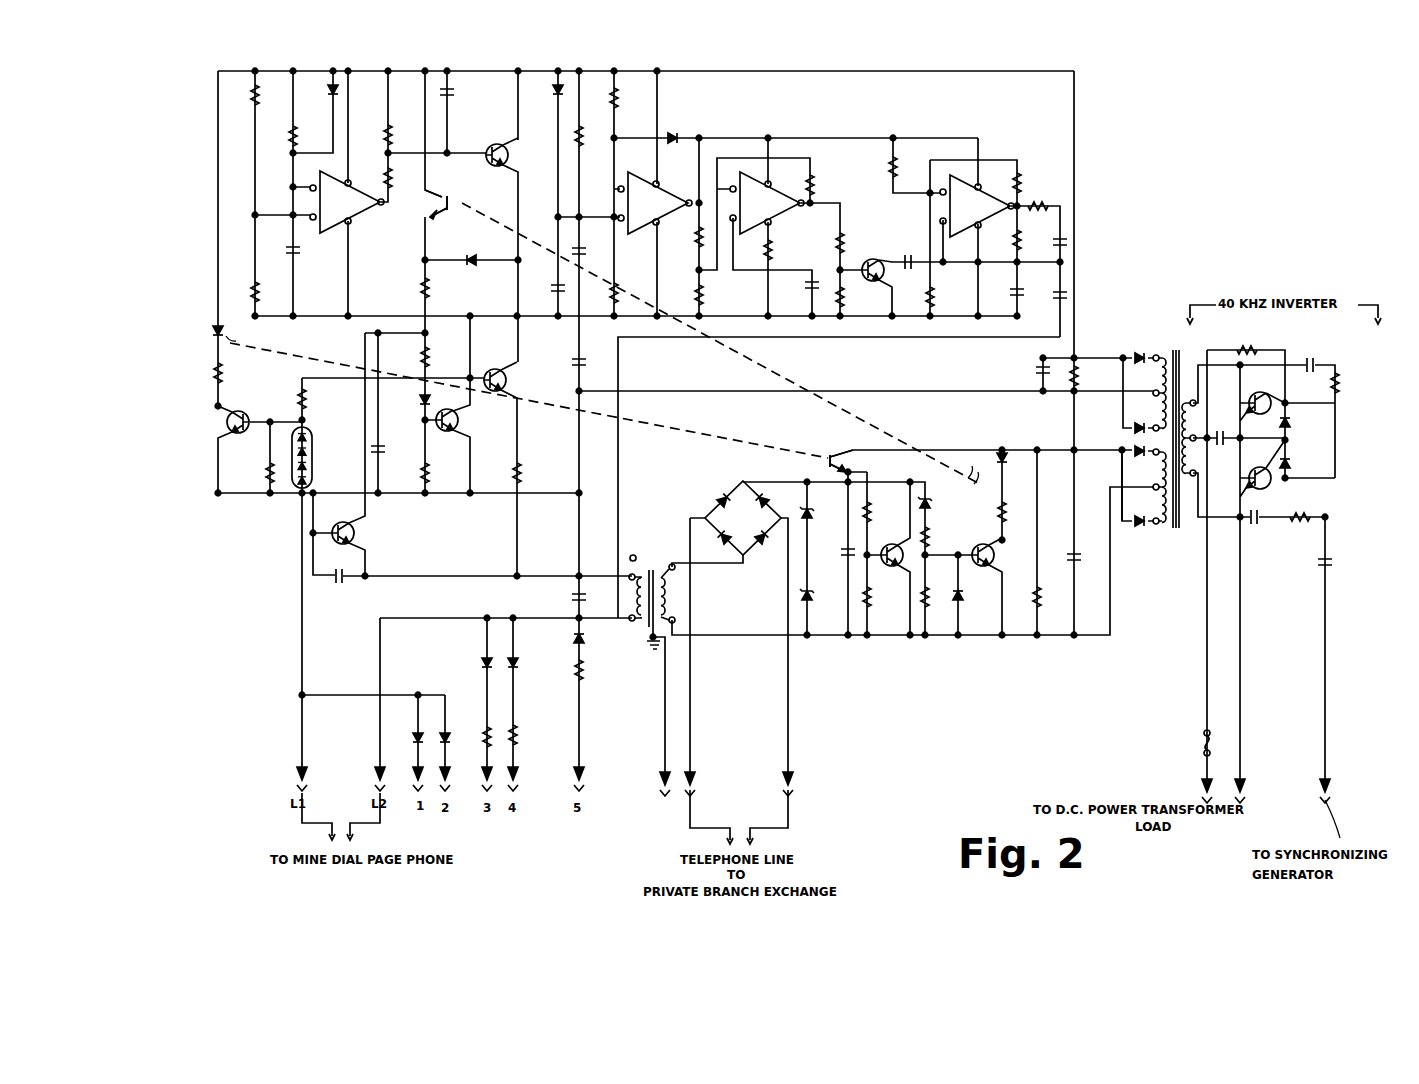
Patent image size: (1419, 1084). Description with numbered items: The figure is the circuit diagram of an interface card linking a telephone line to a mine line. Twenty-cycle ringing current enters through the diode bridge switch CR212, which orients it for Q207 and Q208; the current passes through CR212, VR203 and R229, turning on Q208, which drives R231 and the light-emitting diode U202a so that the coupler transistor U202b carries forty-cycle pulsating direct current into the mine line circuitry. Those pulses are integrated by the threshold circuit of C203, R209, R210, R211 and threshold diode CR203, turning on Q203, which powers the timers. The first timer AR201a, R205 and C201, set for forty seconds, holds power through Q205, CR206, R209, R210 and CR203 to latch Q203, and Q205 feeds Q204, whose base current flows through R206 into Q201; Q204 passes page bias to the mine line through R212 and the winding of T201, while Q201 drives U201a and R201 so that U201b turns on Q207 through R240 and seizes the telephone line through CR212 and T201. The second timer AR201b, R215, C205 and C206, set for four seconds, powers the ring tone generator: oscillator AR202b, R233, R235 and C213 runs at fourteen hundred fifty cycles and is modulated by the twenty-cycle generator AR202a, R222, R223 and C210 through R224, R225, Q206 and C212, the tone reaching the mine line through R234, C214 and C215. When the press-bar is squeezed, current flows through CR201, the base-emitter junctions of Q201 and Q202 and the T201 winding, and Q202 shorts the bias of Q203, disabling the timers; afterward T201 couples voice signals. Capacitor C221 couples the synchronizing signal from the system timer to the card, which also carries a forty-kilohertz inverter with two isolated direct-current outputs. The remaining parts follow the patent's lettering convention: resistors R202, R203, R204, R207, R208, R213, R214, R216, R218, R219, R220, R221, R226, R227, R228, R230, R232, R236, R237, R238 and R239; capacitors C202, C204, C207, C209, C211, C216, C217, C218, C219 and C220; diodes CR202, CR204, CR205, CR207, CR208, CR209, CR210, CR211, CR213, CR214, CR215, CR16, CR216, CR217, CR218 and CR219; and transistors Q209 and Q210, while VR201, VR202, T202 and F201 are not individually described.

The resistor R201 is at (236, 373).
The resistor R202 is at (250, 93).
The resistor R203 is at (250, 288).
The resistor R204 is at (249, 473).
The resistor R205 is at (310, 136).
The resistor R206 is at (321, 399).
The resistor R207 is at (392, 100).
The resistor R208 is at (405, 184).
The resistor R209 is at (444, 288).
The resistor R210 is at (443, 357).
The resistor R211 is at (444, 473).
The resistor R212 is at (535, 473).
The resistor R213 is at (471, 730).
The resistor R214 is at (533, 735).
The resistor R215 is at (586, 120).
The resistor R216 is at (599, 670).
The resistor R218 is at (631, 99).
The resistor R219 is at (605, 298).
The resistor R220 is at (683, 237).
The resistor R221 is at (718, 295).
The resistor R222 is at (829, 185).
The resistor R223 is at (785, 250).
The resistor R224 is at (860, 239).
The resistor R225 is at (859, 297).
The resistor R226 is at (885, 597).
The resistor R227 is at (872, 164).
The resistor R228 is at (948, 297).
The resistor R229 is at (951, 530).
The resistor R230 is at (928, 612).
The resistor R231 is at (1006, 500).
The resistor R232 is at (1042, 612).
The resistor R233 is at (1036, 183).
The resistor R234 is at (1039, 213).
The resistor R235 is at (999, 242).
The resistor R236 is at (1092, 376).
The resistor R237 is at (1249, 339).
The resistor R238 is at (1354, 383).
The resistor R239 is at (1299, 505).
The resistor R240 is at (884, 512).
The capacitor C201 is at (308, 256).
The capacitor C202 is at (335, 584).
The capacitor C203 is at (392, 452).
The capacitor C204 is at (465, 93).
The capacitor C205 is at (547, 292).
The capacitor C206 is at (590, 253).
The capacitor C207 is at (558, 369).
The capacitor C209 is at (557, 597).
The capacitor C210 is at (798, 287).
The capacitor C211 is at (834, 553).
The capacitor C212 is at (912, 270).
The capacitor C213 is at (999, 294).
The capacitor C214 is at (1047, 242).
The capacitor C215 is at (1046, 299).
The capacitor C216 is at (1082, 558).
The capacitor C217 is at (1032, 372).
The capacitor C218 is at (1218, 430).
The capacitor C219 is at (1314, 355).
The capacitor C220 is at (1257, 527).
The sync coupling capacitor C221 is at (1303, 563).
The diode CR201 is at (325, 457).
The diode CR202 is at (330, 87).
The threshold diode CR203 is at (406, 405).
The diode CR204 is at (412, 737).
The diode CR205 is at (465, 746).
The diode CR206 is at (465, 246).
The diode CR207 is at (457, 664).
The diode CR208 is at (534, 673).
The diode CR209 is at (602, 640).
The diode CR210 is at (555, 84).
The diode CR211 is at (687, 128).
The diode bridge switch CR212 is at (743, 518).
The diode CR213 is at (962, 608).
The diode CR214 is at (1135, 348).
The diode CR215 is at (1134, 425).
The diode CR16 is at (1133, 450).
The diode CR216 is at (1144, 486).
The diode CR217 is at (1141, 528).
The diode CR218 is at (1291, 423).
The diode CR219 is at (1291, 464).
The transistor Q201 is at (242, 413).
The transistor Q202 is at (336, 526).
The transistor switch Q203 is at (453, 410).
The transistor Q204 is at (489, 370).
The transistor Q205 is at (486, 147).
The transistor Q206 is at (872, 261).
The high voltage transistor Q207 is at (895, 545).
The transistor Q208 is at (966, 551).
The transistor Q209 is at (1260, 394).
The transistor Q210 is at (1260, 470).
The first timing circuit operational amplifier AR201a is at (366, 206).
The second timing circuit operational amplifier AR201b is at (660, 200).
The second square-wave generator AR202a is at (770, 205).
The square-wave oscillator AR202b is at (980, 210).
The light-emitting diode portion of optical coupler U201a is at (244, 329).
The transistor portion of optical coupler U201b is at (832, 450).
The light-emitting diode portion of optical coupler U202a is at (984, 445).
The transistor portion of optical coupler U202b is at (462, 199).
The zener diode VR201 is at (827, 520).
The zener diode VR202 is at (826, 602).
The series signal diode VR203 is at (948, 499).
The coupling transformer T201 is at (651, 581).
The transformer T202 is at (1177, 429).
The fuse F201 is at (1176, 743).